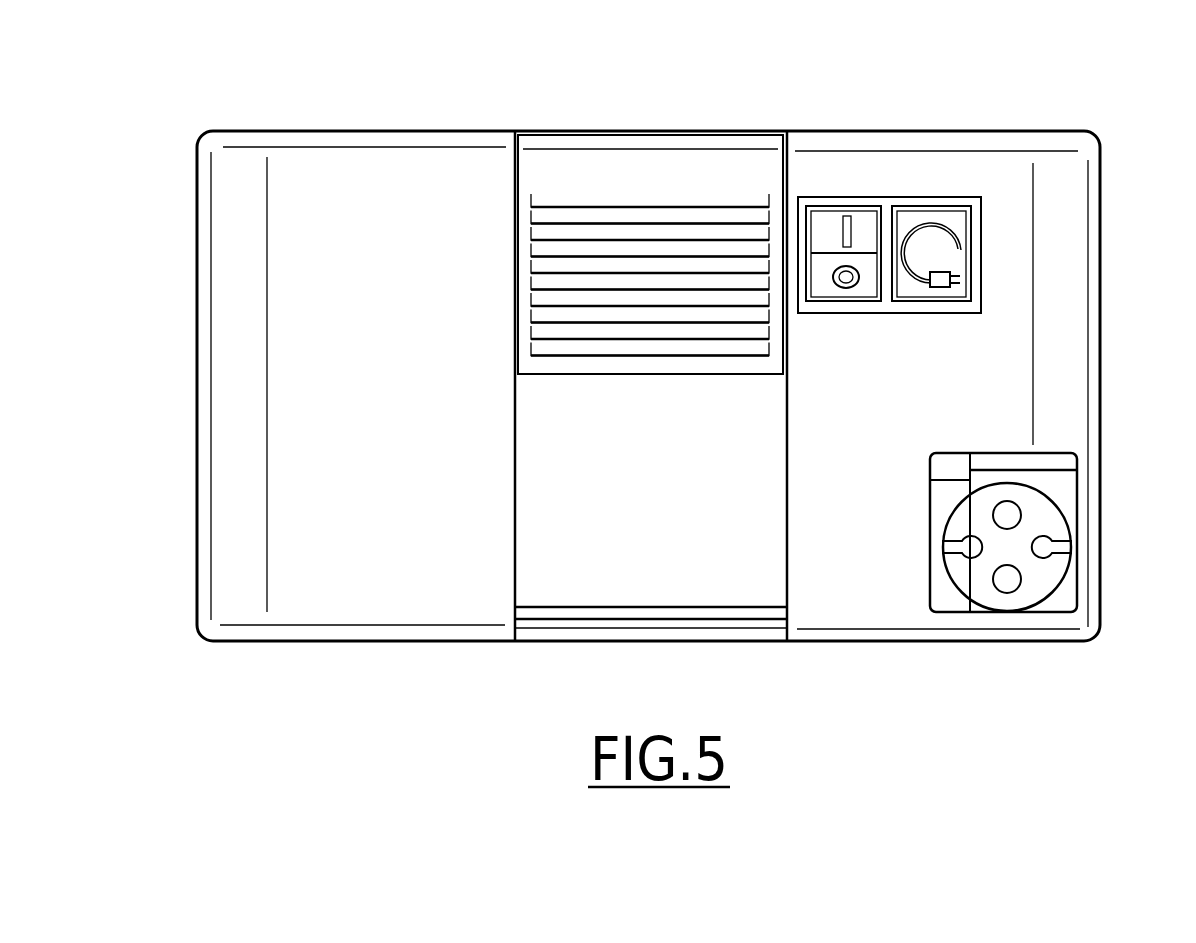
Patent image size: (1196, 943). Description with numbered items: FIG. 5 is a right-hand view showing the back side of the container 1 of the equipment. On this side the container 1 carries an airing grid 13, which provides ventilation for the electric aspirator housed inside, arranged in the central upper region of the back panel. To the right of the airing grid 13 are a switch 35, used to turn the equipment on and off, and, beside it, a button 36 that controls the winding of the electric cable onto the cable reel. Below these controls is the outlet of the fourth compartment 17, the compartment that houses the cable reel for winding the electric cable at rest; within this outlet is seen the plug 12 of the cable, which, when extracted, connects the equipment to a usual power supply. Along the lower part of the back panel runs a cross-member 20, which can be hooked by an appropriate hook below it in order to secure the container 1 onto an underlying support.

The container 1 is at (668, 112).
The airing grid 13 is at (545, 237).
The switch 35 is at (832, 225).
The button 36 is at (926, 222).
The fourth compartment 17 is at (1065, 483).
The plug 12 is at (1037, 583).
The cross-member 20 is at (541, 612).